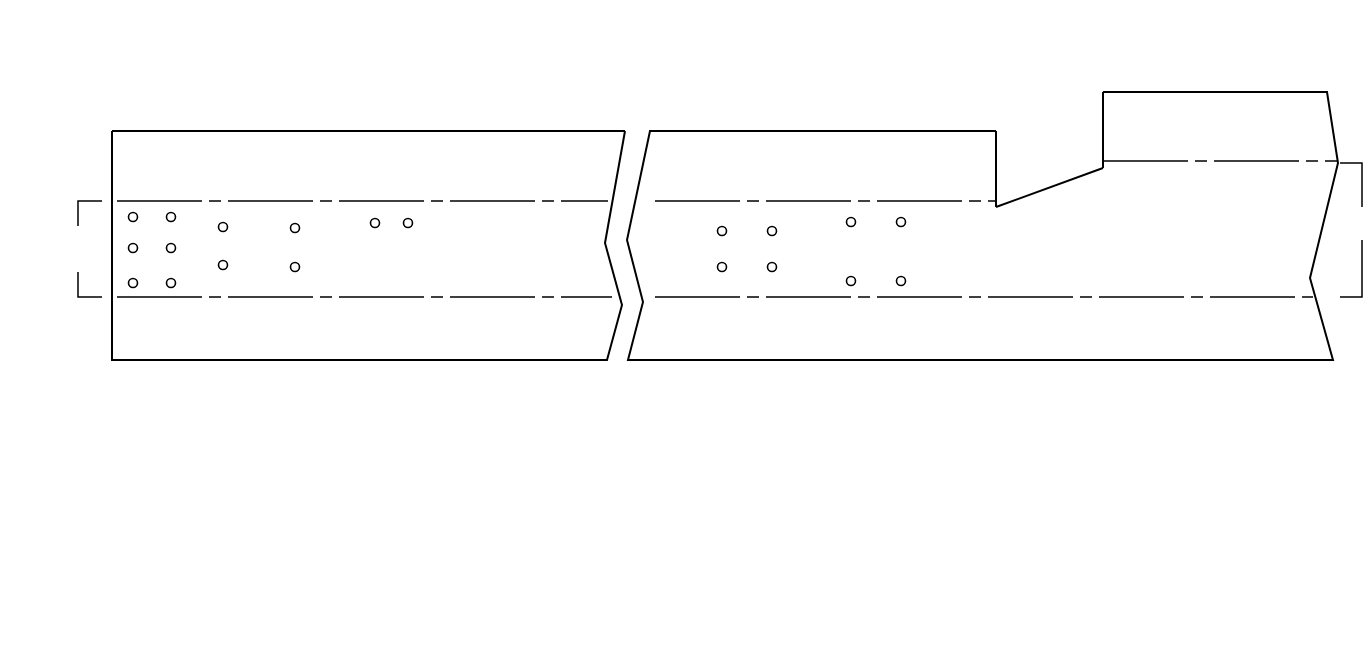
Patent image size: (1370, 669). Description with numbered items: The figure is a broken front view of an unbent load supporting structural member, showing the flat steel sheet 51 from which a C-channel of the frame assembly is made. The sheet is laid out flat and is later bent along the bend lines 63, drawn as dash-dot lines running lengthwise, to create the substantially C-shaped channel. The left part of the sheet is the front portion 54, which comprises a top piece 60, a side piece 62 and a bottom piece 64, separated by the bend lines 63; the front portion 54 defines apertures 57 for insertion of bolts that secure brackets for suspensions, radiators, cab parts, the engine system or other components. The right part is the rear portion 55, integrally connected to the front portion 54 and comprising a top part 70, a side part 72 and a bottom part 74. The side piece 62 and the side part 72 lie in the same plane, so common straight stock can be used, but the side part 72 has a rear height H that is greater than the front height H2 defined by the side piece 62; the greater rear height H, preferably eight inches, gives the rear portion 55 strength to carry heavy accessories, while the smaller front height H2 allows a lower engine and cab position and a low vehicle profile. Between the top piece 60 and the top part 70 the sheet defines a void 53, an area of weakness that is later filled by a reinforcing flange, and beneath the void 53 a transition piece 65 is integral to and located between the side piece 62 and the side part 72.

The flat steel sheet 51 is at (570, 82).
The void 53 is at (1038, 130).
The front portion 54 is at (368, 274).
The rear portion 55 is at (982, 258).
The apertures 57 is at (226, 231).
The top piece 60 is at (368, 146).
The side piece 62 is at (517, 264).
The bend lines 63 is at (272, 200).
The bottom piece 64 is at (517, 347).
The transition piece 65 is at (1094, 223).
The top part 70 is at (1214, 138).
The side part 72 is at (1275, 221).
The bottom part 74 is at (944, 347).
The rear height H is at (1353, 230).
The front height H2 is at (89, 249).